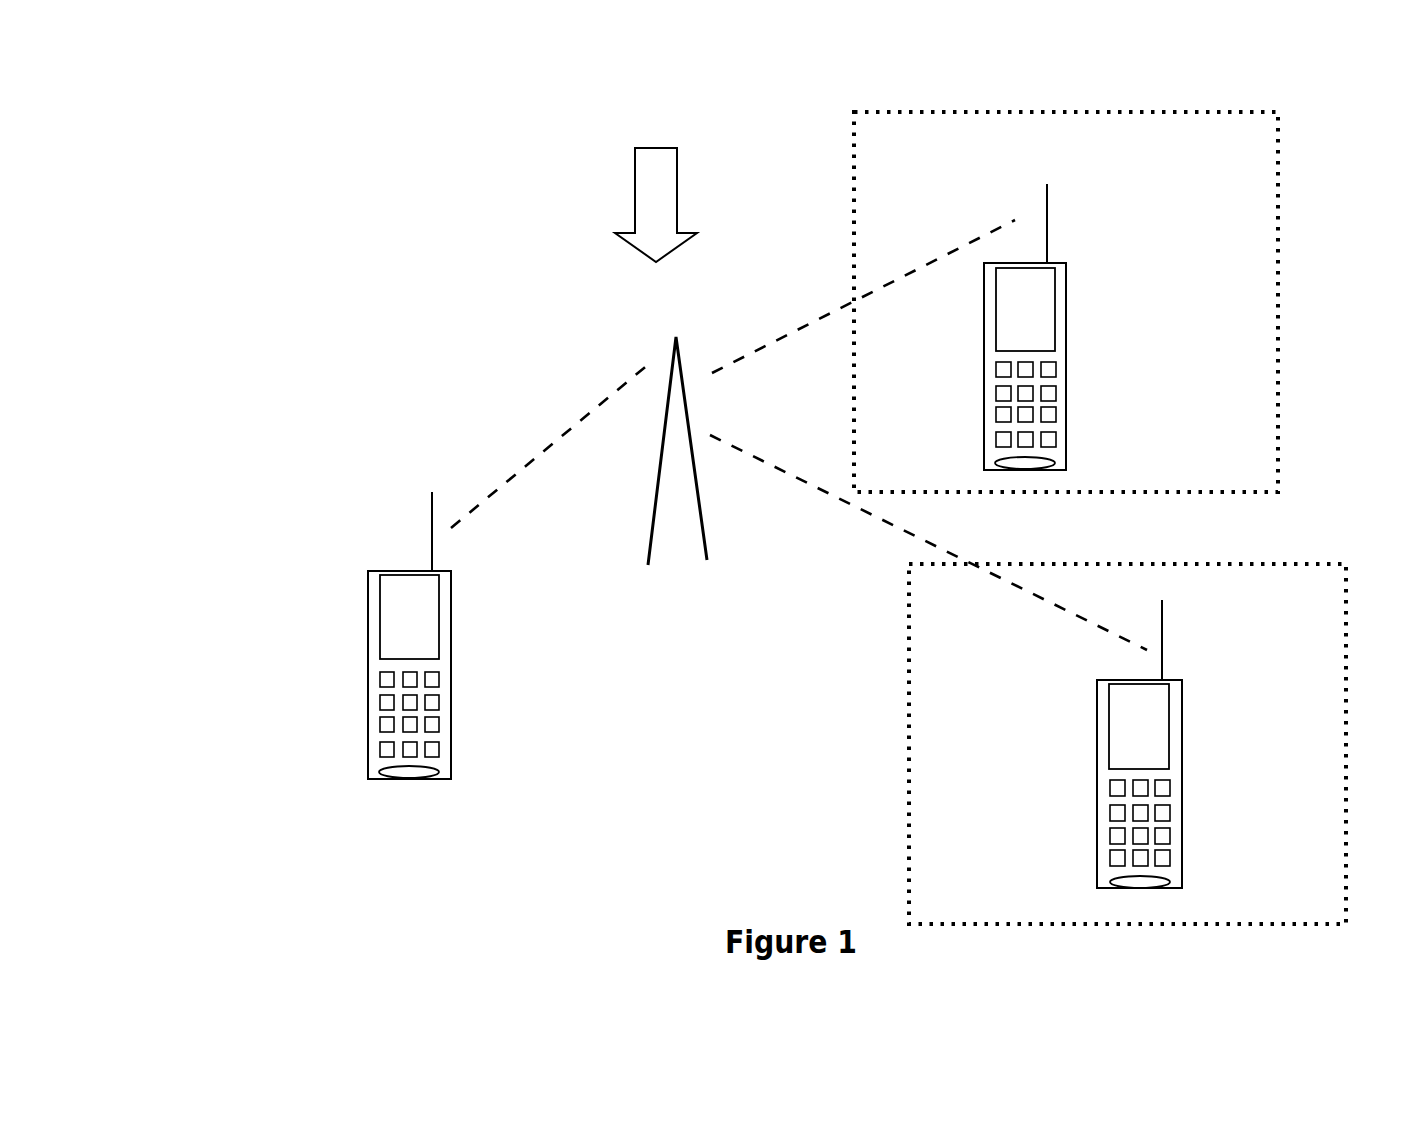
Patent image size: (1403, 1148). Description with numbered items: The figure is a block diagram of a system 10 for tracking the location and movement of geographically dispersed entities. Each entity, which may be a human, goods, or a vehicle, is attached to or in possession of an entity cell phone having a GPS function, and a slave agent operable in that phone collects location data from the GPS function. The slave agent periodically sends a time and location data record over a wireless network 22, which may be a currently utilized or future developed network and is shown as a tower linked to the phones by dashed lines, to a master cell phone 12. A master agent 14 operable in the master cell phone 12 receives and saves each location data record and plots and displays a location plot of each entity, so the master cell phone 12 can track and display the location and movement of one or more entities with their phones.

The system 10 is at (656, 187).
The master cell phone 12 is at (368, 610).
The master agent 14 is at (368, 683).
The wireless network 22 is at (662, 451).